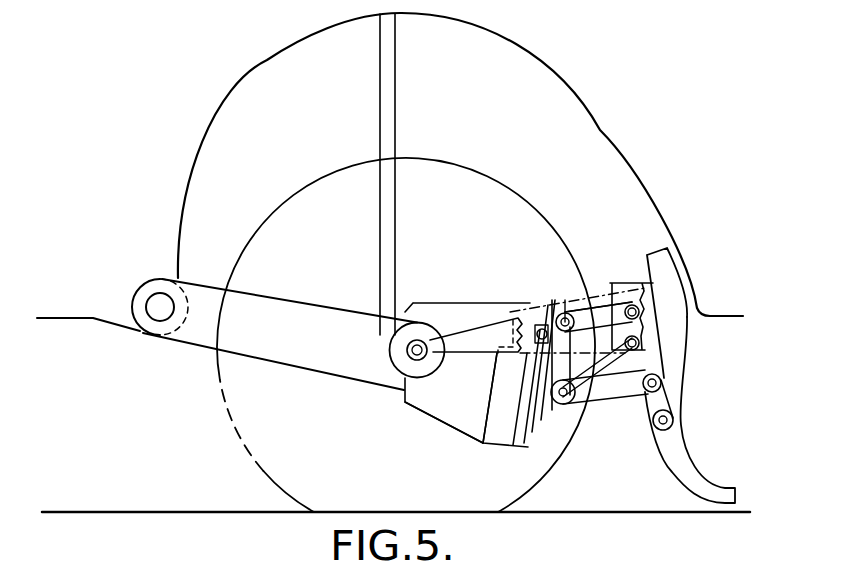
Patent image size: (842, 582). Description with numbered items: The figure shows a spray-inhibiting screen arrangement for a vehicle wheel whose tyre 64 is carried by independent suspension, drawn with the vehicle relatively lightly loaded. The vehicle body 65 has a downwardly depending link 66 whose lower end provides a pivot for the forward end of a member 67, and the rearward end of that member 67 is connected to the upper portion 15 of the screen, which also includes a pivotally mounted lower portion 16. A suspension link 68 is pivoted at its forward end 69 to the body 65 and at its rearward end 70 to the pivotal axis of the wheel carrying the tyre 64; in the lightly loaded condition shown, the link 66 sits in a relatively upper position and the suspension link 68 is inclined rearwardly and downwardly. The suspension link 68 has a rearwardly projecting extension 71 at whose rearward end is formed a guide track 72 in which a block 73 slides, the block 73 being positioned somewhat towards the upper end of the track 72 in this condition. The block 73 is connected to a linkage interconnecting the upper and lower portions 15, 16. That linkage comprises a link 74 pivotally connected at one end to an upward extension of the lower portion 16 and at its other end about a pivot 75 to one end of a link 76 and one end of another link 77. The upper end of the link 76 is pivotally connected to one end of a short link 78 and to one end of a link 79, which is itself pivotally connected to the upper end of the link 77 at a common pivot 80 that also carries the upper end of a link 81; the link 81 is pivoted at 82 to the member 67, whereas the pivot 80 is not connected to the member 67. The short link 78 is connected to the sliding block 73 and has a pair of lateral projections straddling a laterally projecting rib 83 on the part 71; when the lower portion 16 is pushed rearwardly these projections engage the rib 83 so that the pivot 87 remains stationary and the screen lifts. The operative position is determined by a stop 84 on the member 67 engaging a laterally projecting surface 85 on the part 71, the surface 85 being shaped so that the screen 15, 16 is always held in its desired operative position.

The upper portion of the screen 15 is at (658, 262).
The lower portion of the screen 16 is at (692, 477).
The tyre 64 is at (216, 390).
The vehicle body 65 is at (560, 80).
The downwardly depending link 66 is at (385, 68).
The member 67 is at (453, 343).
The suspension link 68 is at (263, 320).
The forward end pivot of suspension link 69 is at (157, 313).
The rearward end pivot of suspension link 70 is at (410, 350).
The rearwardly projecting extension 71 is at (427, 395).
The guide track 72 is at (517, 420).
The sliding block 73 is at (538, 330).
The link 74 is at (668, 403).
The pivot 75 is at (575, 400).
The link 76 is at (552, 385).
The link 77 is at (645, 365).
The short link 78 is at (555, 318).
The link 79 is at (602, 308).
The common pivot 80 is at (629, 305).
The link 81 is at (635, 325).
The pivot 82 is at (645, 342).
The laterally projecting rib 83 is at (533, 430).
The stop 84 is at (503, 352).
The laterally projecting surface 85 is at (495, 403).
The pivot 87 is at (565, 318).